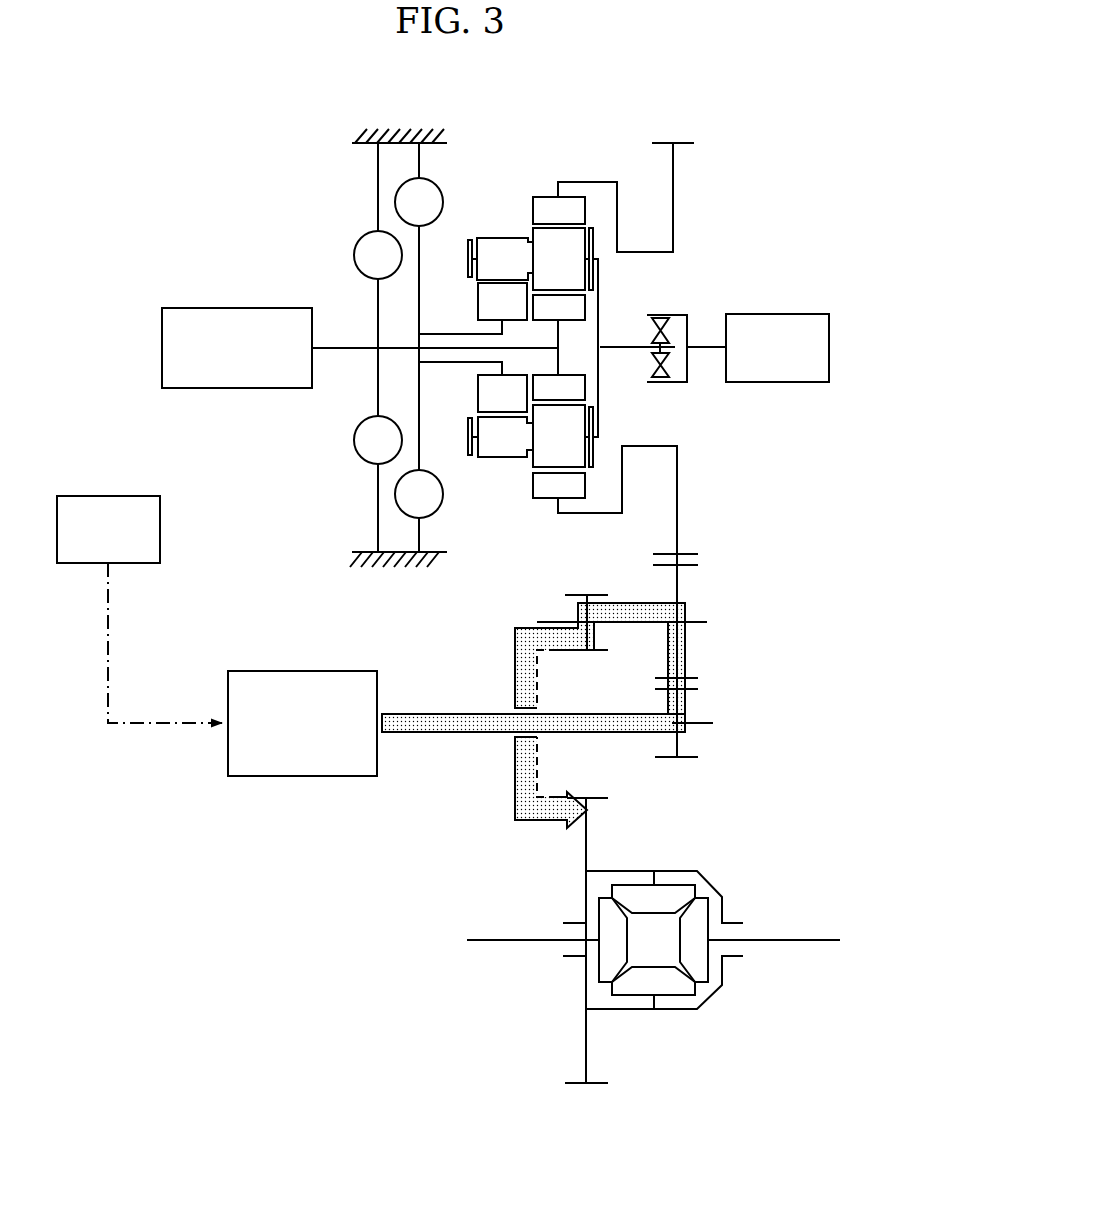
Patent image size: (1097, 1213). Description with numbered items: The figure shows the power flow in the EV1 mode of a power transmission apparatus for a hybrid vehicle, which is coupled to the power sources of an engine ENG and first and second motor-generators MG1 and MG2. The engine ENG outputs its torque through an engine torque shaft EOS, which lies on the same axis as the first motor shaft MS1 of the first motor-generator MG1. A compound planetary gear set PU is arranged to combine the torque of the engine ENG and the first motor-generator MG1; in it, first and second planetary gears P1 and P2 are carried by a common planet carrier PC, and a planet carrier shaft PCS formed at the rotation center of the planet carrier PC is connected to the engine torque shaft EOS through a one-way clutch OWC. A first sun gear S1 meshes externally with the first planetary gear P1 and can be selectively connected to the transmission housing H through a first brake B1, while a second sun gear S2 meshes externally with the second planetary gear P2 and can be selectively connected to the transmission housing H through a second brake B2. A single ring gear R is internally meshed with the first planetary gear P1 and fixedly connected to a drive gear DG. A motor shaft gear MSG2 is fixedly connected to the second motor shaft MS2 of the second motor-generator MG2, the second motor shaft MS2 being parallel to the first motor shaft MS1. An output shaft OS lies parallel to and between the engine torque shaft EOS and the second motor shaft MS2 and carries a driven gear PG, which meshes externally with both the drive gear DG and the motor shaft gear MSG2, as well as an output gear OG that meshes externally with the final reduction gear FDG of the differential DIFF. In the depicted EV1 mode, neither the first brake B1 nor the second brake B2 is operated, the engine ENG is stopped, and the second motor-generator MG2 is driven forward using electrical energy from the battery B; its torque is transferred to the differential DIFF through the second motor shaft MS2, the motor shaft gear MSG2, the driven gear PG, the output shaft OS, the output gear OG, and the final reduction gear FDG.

The transmission housing H is at (400, 130).
The compound planetary gear set PU is at (556, 303).
The first brake B1 is at (378, 347).
The second brake B2 is at (419, 347).
The ring gear R is at (613, 197).
The first planetary gear P1 is at (559, 259).
The second planetary gear P2 is at (505, 259).
The first sun gear S1 is at (559, 335).
The second sun gear S2 is at (473, 329).
The planet carrier PC is at (603, 290).
The one-way clutch OWC is at (674, 320).
The engine ENG is at (777, 348).
The first motor-generator MG1 is at (237, 348).
The first motor shaft MS1 is at (343, 351).
The planet carrier shaft PCS is at (628, 351).
The engine torque shaft EOS is at (708, 351).
The drive gear DG is at (678, 498).
The driven gear PG is at (680, 590).
The motor shaft gear MSG2 is at (683, 703).
The battery B is at (187, 529).
The second motor-generator MG2 is at (302, 723).
The second motor shaft MS2 is at (410, 735).
The output shaft OS is at (692, 625).
The output gear OG is at (583, 610).
The final reduction gear FDG is at (588, 834).
The differential DIFF is at (719, 877).